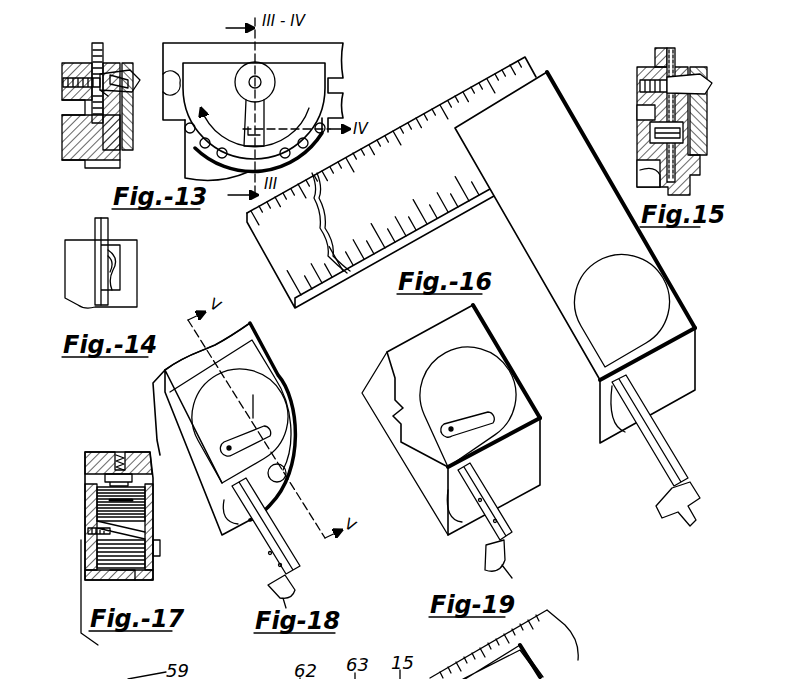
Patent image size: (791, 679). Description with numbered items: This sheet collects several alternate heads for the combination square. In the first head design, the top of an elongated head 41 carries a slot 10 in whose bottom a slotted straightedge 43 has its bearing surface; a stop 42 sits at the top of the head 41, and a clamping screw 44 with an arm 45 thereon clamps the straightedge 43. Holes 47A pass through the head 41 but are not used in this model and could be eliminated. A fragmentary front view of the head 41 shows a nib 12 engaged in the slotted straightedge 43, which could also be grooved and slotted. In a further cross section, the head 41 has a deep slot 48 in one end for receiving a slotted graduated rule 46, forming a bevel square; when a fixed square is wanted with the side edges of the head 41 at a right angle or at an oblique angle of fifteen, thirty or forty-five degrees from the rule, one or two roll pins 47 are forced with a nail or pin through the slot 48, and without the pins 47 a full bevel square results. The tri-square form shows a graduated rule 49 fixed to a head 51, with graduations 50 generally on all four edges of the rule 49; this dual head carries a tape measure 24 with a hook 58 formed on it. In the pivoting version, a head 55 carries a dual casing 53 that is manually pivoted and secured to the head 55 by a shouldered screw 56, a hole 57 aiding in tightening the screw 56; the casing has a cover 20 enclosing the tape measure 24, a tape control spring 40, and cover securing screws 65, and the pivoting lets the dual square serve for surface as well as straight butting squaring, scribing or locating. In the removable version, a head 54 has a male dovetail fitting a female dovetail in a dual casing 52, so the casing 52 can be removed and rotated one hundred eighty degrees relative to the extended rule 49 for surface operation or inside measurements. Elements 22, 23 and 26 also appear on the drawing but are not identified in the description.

In FIG. 13, the slot 10 is at (120, 70).
In FIG. 14, the nib 12 is at (118, 258).
In FIG. 19, the cover 20 is at (643, 290).
In FIG. 18, the cover 20 is at (288, 415).
In FIG. 17, the cover 20 is at (150, 495).
In FIG. 19, the lever 22 is at (467, 424).
In FIG. 18, the lever 22 is at (228, 445).
In FIG. 18, the pivot pin 23 is at (251, 397).
In FIG. 17, the pivot pin 23 is at (160, 555).
In FIG. 19, the tape measure 24 is at (503, 512).
In FIG. 18, the tape measure 24 is at (296, 558).
In FIG. 17, the tape measure 24 is at (155, 520).
In FIG. 19, the blade end hook 26 is at (508, 560).
In FIG. 18, the blade end hook 26 is at (298, 582).
In FIG. 17, the tape control spring 40 is at (152, 528).
In FIG. 13, the elongated head 41 is at (73, 62).
In FIG. 14, the elongated head 41 is at (140, 292).
In FIG. 15, the elongated head 41 is at (635, 78).
In FIG. 13, the stop 42 is at (96, 43).
In FIG. 14, the stop 42 is at (84, 216).
In FIG. 15, the stop 42 is at (652, 55).
In FIG. 13, the slotted straightedge 43 is at (108, 60).
In FIG. 14, the slotted straightedge 43 is at (110, 226).
In FIG. 13, the clamping screw 44 is at (123, 72).
In FIG. 15, the clamping screw 44 is at (645, 88).
In FIG. 13, the arm 45 is at (138, 62).
In FIG. 15, the arm 45 is at (697, 64).
In FIG. 15, the slotted graduated rule 46 is at (668, 44).
In FIG. 15, the roll pins 47 is at (652, 133).
In FIG. 13, the holes 47A is at (128, 130).
In FIG. 15, the holes 47A is at (643, 127).
In FIG. 15, the deep slot 48 is at (668, 172).
In FIG. 16, the graduated rule 49 is at (313, 304).
In FIG. 16, the graduations 50 is at (346, 277).
In FIG. 19, the head 51 is at (647, 237).
In FIG. 19, the dual casing 52 is at (530, 428).
In FIG. 18, the dual casing 53 is at (275, 357).
In FIG. 17, the dual casing 53 is at (87, 455).
In FIG. 19, the head 54 is at (372, 411).
In FIG. 18, the head 55 is at (255, 326).
In FIG. 17, the head 55 is at (143, 460).
In FIG. 17, the shouldered screw 56 is at (120, 452).
In FIG. 18, the hole 57 is at (286, 478).
In FIG. 17, the hole 57 is at (135, 580).
In FIG. 19, the hook 58 is at (650, 507).
In FIG. 17, the cover securing screws 65 is at (102, 598).